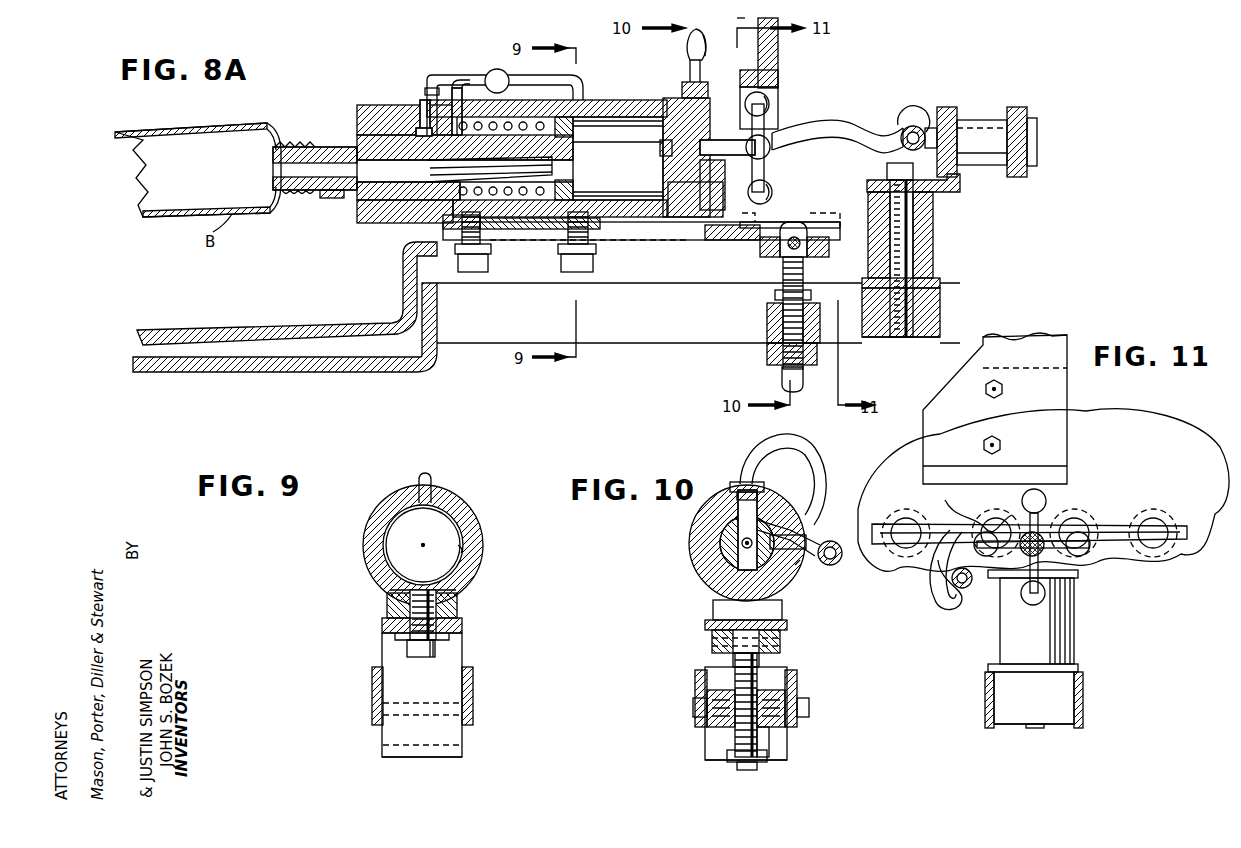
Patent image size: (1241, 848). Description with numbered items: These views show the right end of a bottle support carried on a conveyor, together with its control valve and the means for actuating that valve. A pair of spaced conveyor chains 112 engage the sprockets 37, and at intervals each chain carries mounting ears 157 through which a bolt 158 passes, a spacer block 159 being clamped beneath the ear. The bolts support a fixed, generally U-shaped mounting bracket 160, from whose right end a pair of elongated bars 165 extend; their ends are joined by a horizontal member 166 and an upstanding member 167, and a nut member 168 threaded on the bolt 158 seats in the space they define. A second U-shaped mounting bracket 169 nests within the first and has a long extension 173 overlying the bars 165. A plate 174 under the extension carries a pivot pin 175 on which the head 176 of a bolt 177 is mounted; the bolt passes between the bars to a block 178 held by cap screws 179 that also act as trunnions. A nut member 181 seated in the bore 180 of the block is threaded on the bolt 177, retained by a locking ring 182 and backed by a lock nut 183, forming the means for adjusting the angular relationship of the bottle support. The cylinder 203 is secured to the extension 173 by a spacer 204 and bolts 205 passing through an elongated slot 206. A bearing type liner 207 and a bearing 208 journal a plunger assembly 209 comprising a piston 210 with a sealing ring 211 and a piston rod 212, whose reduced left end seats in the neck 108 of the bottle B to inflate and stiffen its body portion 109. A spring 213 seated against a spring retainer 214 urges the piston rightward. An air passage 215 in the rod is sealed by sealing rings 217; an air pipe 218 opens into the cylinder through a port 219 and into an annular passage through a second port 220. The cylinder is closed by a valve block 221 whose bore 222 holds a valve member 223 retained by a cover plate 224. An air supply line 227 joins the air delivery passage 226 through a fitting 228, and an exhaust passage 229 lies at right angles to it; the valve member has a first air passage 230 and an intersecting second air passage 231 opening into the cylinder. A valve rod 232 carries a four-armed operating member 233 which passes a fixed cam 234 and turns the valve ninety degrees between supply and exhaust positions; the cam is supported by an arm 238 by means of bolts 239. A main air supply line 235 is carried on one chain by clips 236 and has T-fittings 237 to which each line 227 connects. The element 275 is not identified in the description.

In FIG. 11, the sprockets 37 is at (1145, 425).
In FIG. 8A, the neck 108 is at (304, 197).
In FIG. 8A, the body portion 109 is at (262, 127).
In FIG. 8A, the conveyor chains 112 is at (1027, 112).
In FIG. 11, the conveyor chains 112 is at (1155, 550).
In FIG. 8A, the mounting ears 157 is at (876, 180).
In FIG. 11, the mounting ears 157 is at (1070, 578).
In FIG. 8A, the bolt 158 is at (912, 218).
In FIG. 11, the bolt 158 is at (1040, 728).
In FIG. 8A, the spacer block 159 is at (934, 258).
In FIG. 11, the spacer block 159 is at (1050, 628).
In FIG. 8A, the mounting bracket 160 is at (320, 374).
In FIG. 9, the mounting bracket 160 is at (430, 757).
In FIG. 10, the mounting bracket 160 is at (705, 753).
In FIG. 8A, the elongated bars 165 is at (675, 344).
In FIG. 9, the elongated bars 165 is at (478, 692).
In FIG. 10, the elongated bars 165 is at (797, 688).
In FIG. 11, the elongated bars 165 is at (1083, 695).
In FIG. 8A, the horizontal member 166 is at (940, 280).
In FIG. 11, the horizontal member 166 is at (1078, 668).
In FIG. 8A, the upstanding member 167 is at (940, 312).
In FIG. 8A, the nut member 168 is at (895, 337).
In FIG. 11, the nut member 168 is at (1020, 724).
In FIG. 8A, the mounting bracket 169 is at (290, 330).
In FIG. 9, the mounting bracket 169 is at (395, 651).
In FIG. 10, the mounting bracket 169 is at (787, 670).
In FIG. 8A, the long extension 173 is at (730, 240).
In FIG. 9, the long extension 173 is at (463, 626).
In FIG. 10, the long extension 173 is at (782, 620).
In FIG. 8A, the plate 174 is at (815, 245).
In FIG. 10, the plate 174 is at (712, 648).
In FIG. 8A, the pivot pin 175 is at (795, 220).
In FIG. 10, the pivot pin 175 is at (782, 640).
In FIG. 8A, the head 176 is at (782, 255).
In FIG. 10, the head 176 is at (735, 660).
In FIG. 8A, the bolt 177 is at (806, 290).
In FIG. 10, the bolt 177 is at (770, 668).
In FIG. 8A, the block 178 is at (767, 318).
In FIG. 10, the block 178 is at (785, 720).
In FIG. 10, the cap screws 179 is at (810, 705).
In FIG. 8A, the bore 180 is at (820, 316).
In FIG. 10, the bore 180 is at (770, 740).
In FIG. 8A, the nut member 181 is at (767, 355).
In FIG. 10, the nut member 181 is at (733, 757).
In FIG. 8A, the locking ring 182 is at (775, 296).
In FIG. 10, the locking ring 182 is at (707, 692).
In FIG. 8A, the lock nut 183 is at (805, 380).
In FIG. 10, the lock nut 183 is at (758, 768).
In FIG. 8A, the cylinder 203 is at (596, 100).
In FIG. 9, the cylinder 203 is at (470, 515).
In FIG. 8A, the spacer 204 is at (440, 224).
In FIG. 9, the spacer 204 is at (462, 604).
In FIG. 8A, the bolts 205 is at (560, 262).
In FIG. 9, the bolts 205 is at (437, 650).
In FIG. 8A, the elongated slot 206 is at (632, 238).
In FIG. 8A, the bearing type liner 207 is at (615, 120).
In FIG. 9, the bearing type liner 207 is at (463, 551).
In FIG. 8A, the bearing 208 is at (360, 116).
In FIG. 8A, the plunger assembly 209 is at (365, 210).
In FIG. 8A, the piston 210 is at (560, 160).
In FIG. 8A, the sealing ring 211 is at (568, 183).
In FIG. 8A, the piston rod 212 is at (340, 147).
In FIG. 8A, the spring 213 is at (462, 105).
In FIG. 8A, the spring retainer 214 is at (432, 88).
In FIG. 8A, the air passage 215 is at (328, 199).
In FIG. 8A, the sealing rings 217 is at (422, 105).
In FIG. 8A, the air pipe 218 is at (572, 76).
In FIG. 9, the air pipe 218 is at (432, 478).
In FIG. 8A, the port 219 is at (570, 120).
In FIG. 9, the port 219 is at (438, 502).
In FIG. 8A, the second port 220 is at (418, 128).
In FIG. 8A, the valve block 221 is at (672, 98).
In FIG. 10, the valve block 221 is at (690, 533).
In FIG. 10, the bore 222 is at (722, 557).
In FIG. 10, the valve member 223 is at (795, 575).
In FIG. 8A, the cover plate 224 is at (710, 90).
In FIG. 10, the air delivery passage 226 is at (770, 520).
In FIG. 8A, the air supply line 227 is at (860, 124).
In FIG. 10, the air supply line 227 is at (818, 465).
In FIG. 11, the air supply line 227 is at (945, 612).
In FIG. 10, the fitting 228 is at (733, 483).
In FIG. 10, the exhaust passage 229 is at (808, 560).
In FIG. 8A, the first air passage 230 is at (672, 188).
In FIG. 10, the first air passage 230 is at (808, 538).
In FIG. 8A, the second air passage 231 is at (662, 160).
In FIG. 10, the second air passage 231 is at (737, 565).
In FIG. 8A, the valve rod 232 is at (771, 152).
In FIG. 8A, the operating member 233 is at (773, 192).
In FIG. 11, the operating member 233 is at (1046, 497).
In FIG. 8A, the cam member 234 is at (778, 65).
In FIG. 11, the cam member 234 is at (972, 492).
In FIG. 8A, the main air supply line 235 is at (922, 124).
In FIG. 8A, the clips 236 is at (907, 128).
In FIG. 11, the T-fittings 237 is at (950, 580).
In FIG. 8A, the arm 238 is at (758, 22).
In FIG. 11, the arm 238 is at (1045, 336).
In FIG. 11, the bolts 239 is at (998, 399).
In FIG. 8A, the ball 275 is at (770, 110).